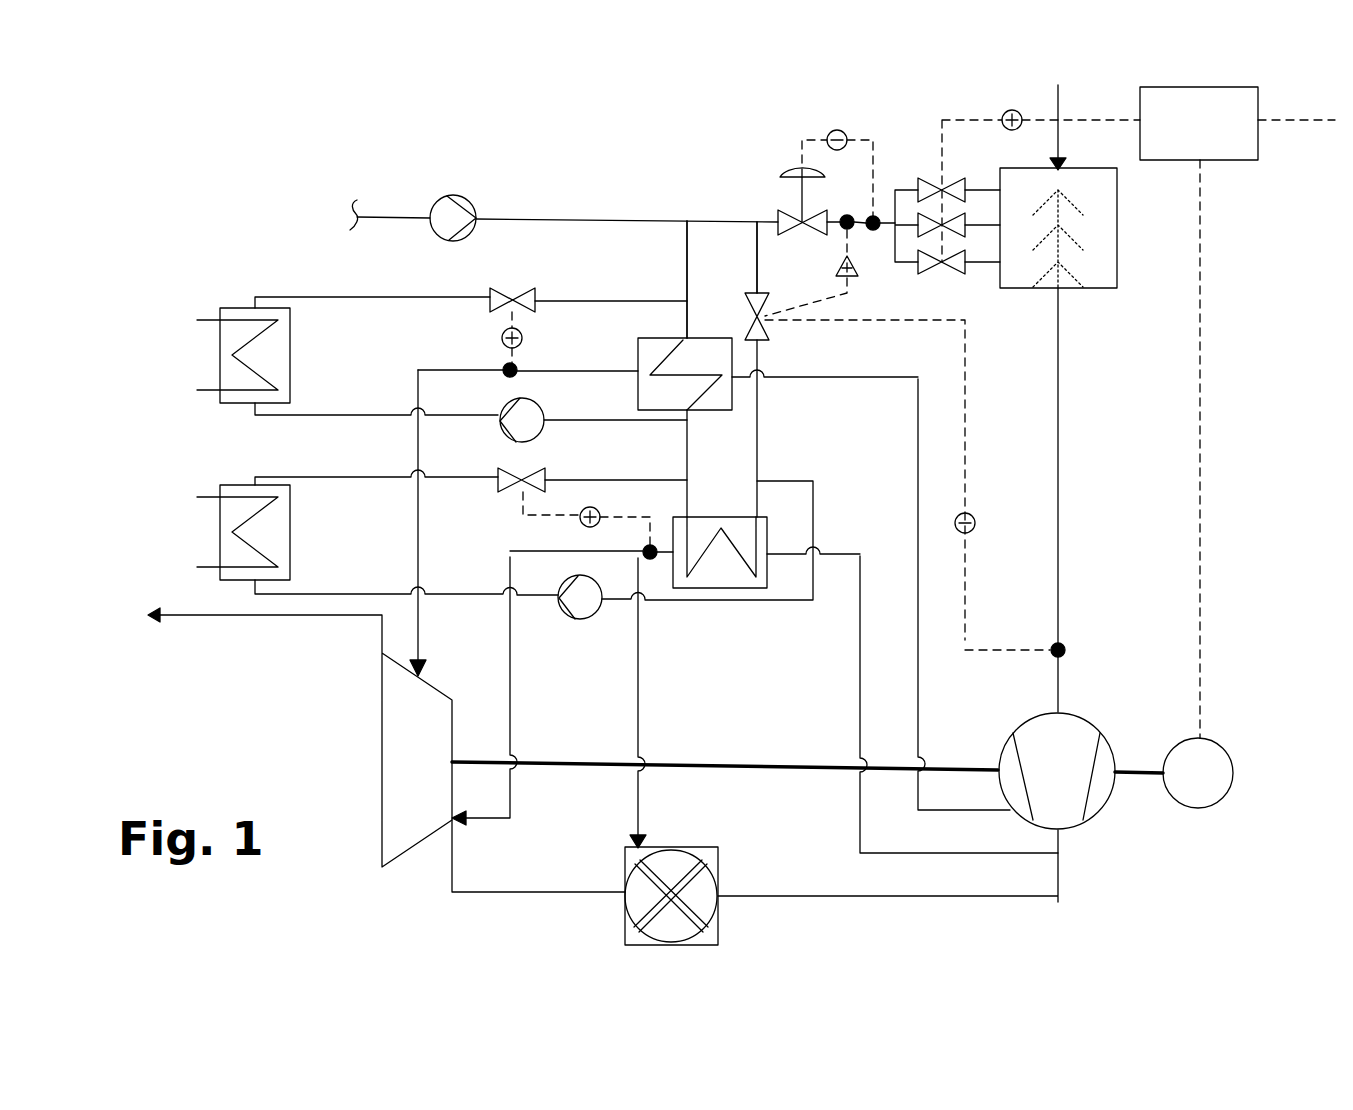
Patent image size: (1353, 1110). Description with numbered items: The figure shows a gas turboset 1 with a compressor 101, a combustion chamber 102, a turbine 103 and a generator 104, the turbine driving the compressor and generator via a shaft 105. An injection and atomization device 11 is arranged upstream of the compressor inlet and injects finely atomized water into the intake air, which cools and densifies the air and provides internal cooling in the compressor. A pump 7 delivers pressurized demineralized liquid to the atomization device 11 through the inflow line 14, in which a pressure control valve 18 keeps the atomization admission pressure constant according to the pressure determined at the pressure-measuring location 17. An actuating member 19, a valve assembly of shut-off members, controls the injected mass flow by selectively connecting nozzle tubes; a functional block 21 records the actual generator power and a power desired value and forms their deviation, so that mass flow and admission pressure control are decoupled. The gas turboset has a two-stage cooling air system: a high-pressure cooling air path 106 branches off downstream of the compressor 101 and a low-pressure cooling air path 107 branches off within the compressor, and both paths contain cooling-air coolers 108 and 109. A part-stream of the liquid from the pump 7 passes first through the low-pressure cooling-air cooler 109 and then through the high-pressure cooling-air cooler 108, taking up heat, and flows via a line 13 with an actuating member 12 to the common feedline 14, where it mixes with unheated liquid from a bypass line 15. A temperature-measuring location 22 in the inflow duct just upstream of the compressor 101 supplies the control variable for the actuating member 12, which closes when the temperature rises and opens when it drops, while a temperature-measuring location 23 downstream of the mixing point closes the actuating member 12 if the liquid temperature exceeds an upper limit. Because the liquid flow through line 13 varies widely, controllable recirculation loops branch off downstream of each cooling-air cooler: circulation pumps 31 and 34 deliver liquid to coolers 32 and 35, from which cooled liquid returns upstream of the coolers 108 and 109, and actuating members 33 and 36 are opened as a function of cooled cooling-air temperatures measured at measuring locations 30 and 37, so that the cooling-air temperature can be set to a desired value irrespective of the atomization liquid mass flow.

The gas turboset 1 is at (728, 828).
The pump 7 is at (452, 198).
The injection and atomization device 11 is at (1080, 285).
The actuating member 12 is at (765, 335).
The line 13 is at (756, 425).
The inflow line 14 is at (768, 222).
The bypass line 15 is at (708, 220).
The pressure-measuring location 17 is at (873, 210).
The pressure control valve 18 is at (800, 220).
The actuating member 19 is at (942, 273).
The functional block 21 is at (1213, 160).
The temperature-measuring location 22 is at (1060, 648).
The temperature-measuring location 23 is at (850, 230).
The measuring location 30 is at (652, 560).
The circulation pump 31 is at (575, 620).
The cooler 32 is at (290, 510).
The actuating member 33 is at (500, 482).
The circulation pump 34 is at (535, 425).
The cooler 35 is at (290, 320).
The actuating member 36 is at (525, 305).
The measuring location 37 is at (512, 372).
The compressor 101 is at (1082, 832).
The combustion chamber 102 is at (718, 922).
The turbine 103 is at (382, 812).
The generator 104 is at (1208, 808).
The shaft 105 is at (755, 772).
The high-pressure cooling air path 106 is at (860, 735).
The low-pressure cooling air path 107 is at (918, 732).
The high-pressure cooling-air cooler 108 is at (695, 588).
The low-pressure cooling-air cooler 109 is at (732, 388).